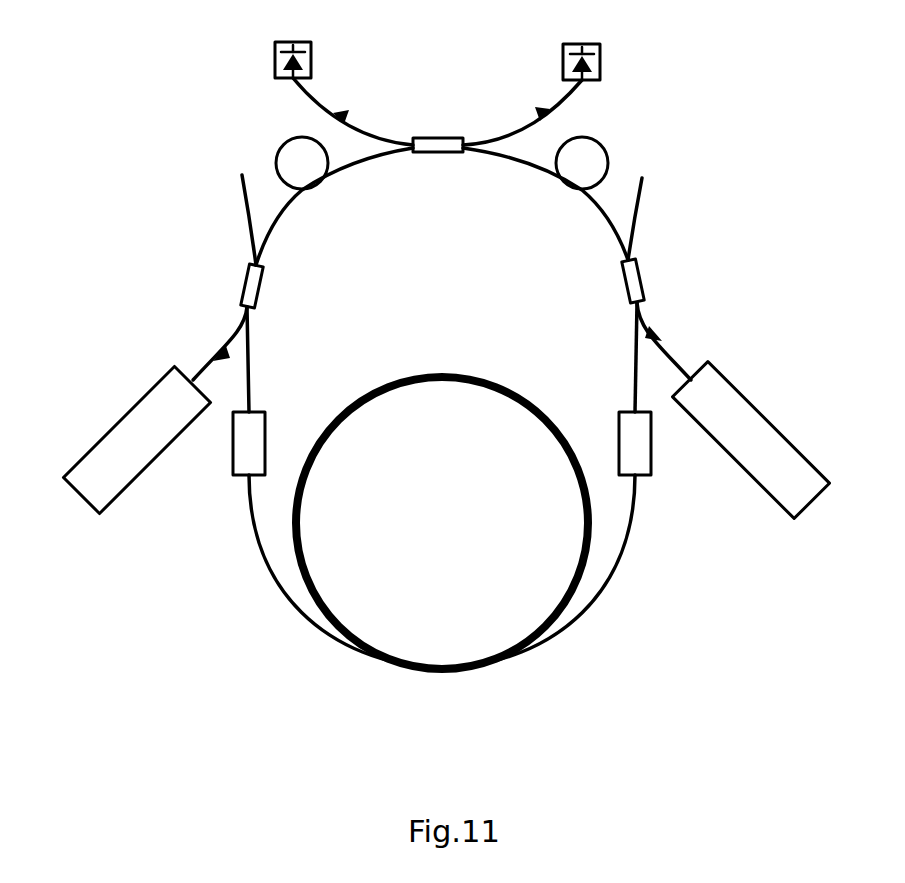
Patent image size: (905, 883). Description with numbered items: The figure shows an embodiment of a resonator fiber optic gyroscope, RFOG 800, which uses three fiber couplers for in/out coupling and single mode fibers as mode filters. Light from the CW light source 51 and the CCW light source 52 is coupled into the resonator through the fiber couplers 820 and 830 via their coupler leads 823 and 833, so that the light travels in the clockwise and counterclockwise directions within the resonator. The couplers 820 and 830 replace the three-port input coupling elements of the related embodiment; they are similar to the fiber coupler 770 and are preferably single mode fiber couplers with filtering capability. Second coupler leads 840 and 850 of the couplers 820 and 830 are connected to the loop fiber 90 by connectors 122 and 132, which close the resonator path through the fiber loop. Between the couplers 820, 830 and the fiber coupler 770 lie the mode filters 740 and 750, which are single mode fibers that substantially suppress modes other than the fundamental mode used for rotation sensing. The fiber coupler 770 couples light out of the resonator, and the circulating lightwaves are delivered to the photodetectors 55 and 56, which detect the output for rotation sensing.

The RFOG 800 is at (786, 102).
The fiber loop 90 is at (500, 398).
The connector 122 is at (231, 448).
The connector 132 is at (652, 445).
The second coupler lead 840 is at (251, 365).
The second coupler lead 850 is at (633, 378).
The fiber coupler 820 is at (243, 282).
The fiber coupler 830 is at (642, 277).
The coupler lead 823 is at (237, 323).
The coupler lead 833 is at (672, 353).
The light source 51 is at (115, 422).
The light source 52 is at (780, 425).
The mode filter 740 is at (285, 140).
The mode filter 750 is at (600, 142).
The fiber coupler 770 is at (432, 153).
The photodetector 55 is at (312, 58).
The photodetector 56 is at (563, 53).